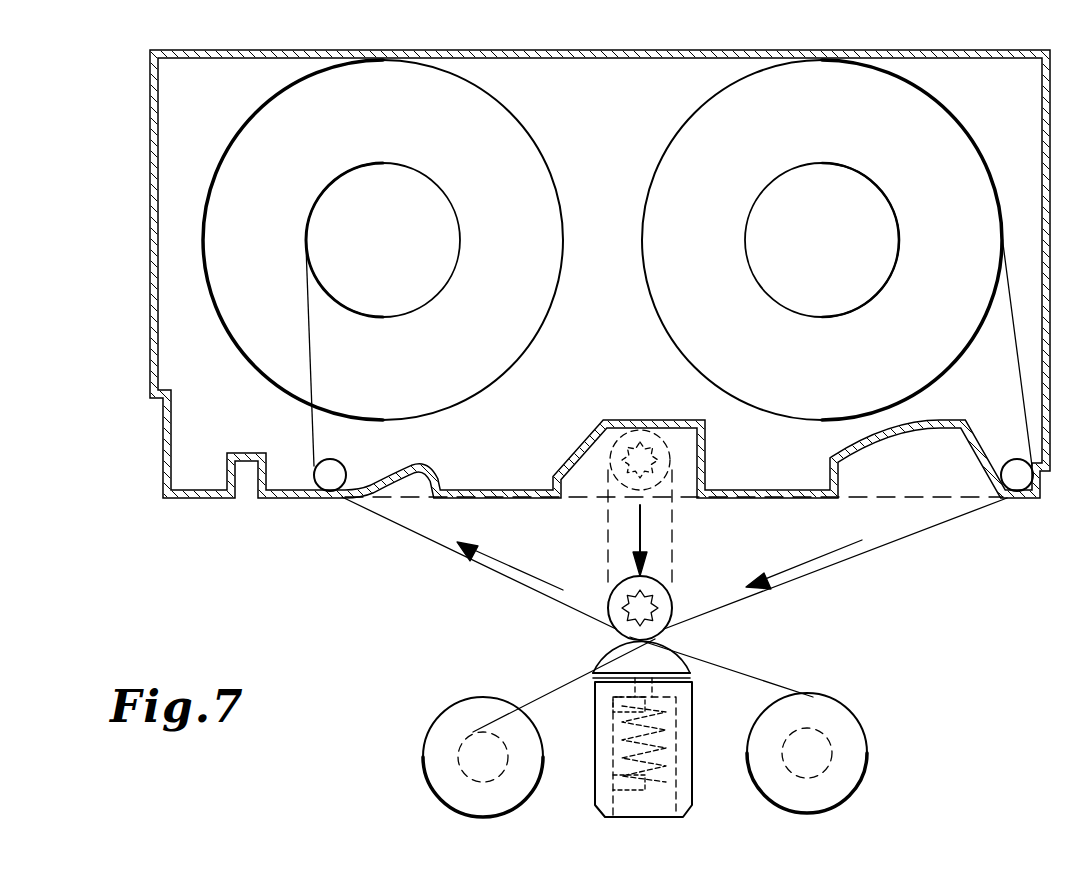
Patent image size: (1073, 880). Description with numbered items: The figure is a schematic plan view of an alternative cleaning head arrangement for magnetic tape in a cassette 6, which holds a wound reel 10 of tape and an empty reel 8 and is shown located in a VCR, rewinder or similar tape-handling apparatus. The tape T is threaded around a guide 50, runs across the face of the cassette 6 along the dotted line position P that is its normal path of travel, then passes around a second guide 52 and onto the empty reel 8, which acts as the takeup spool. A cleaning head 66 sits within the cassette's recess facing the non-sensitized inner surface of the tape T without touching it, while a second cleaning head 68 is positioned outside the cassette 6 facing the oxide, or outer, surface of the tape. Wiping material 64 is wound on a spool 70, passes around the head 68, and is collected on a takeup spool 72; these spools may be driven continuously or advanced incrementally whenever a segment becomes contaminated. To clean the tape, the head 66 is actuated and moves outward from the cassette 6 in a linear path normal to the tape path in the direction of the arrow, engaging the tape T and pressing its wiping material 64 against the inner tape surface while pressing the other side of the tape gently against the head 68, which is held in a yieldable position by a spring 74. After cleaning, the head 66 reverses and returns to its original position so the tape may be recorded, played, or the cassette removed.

The cassette 6 is at (150, 200).
The empty reel 8 is at (217, 172).
The wound reel 10 is at (659, 165).
The guide 50 is at (1013, 466).
The second guide 52 is at (336, 470).
The wiping material 64 is at (773, 680).
The cleaning head 66 is at (683, 425).
The second cleaning head 68 is at (690, 662).
The spool 70 is at (863, 732).
The takeup spool 72 is at (434, 722).
The spring 74 is at (675, 755).
The dotted line position P is at (577, 502).
The tape T is at (928, 530).